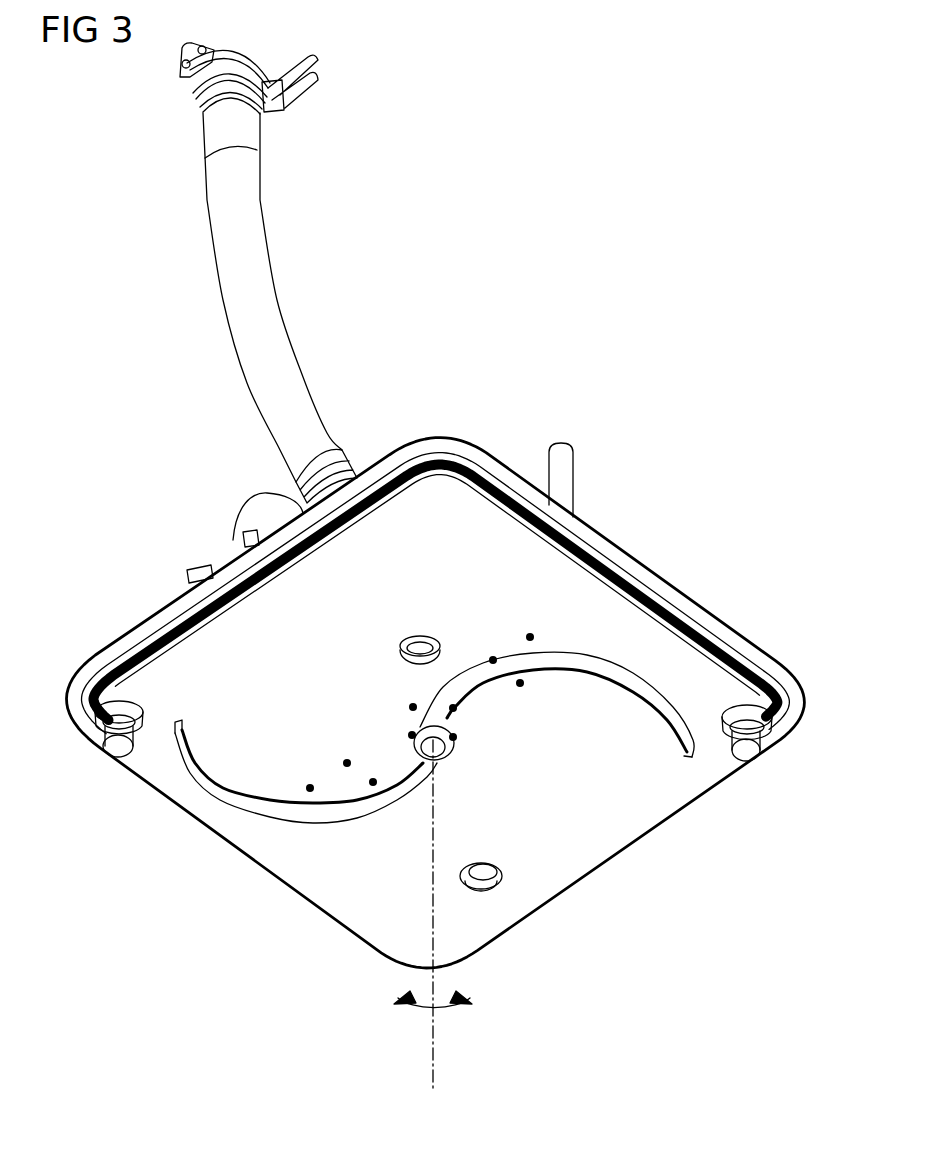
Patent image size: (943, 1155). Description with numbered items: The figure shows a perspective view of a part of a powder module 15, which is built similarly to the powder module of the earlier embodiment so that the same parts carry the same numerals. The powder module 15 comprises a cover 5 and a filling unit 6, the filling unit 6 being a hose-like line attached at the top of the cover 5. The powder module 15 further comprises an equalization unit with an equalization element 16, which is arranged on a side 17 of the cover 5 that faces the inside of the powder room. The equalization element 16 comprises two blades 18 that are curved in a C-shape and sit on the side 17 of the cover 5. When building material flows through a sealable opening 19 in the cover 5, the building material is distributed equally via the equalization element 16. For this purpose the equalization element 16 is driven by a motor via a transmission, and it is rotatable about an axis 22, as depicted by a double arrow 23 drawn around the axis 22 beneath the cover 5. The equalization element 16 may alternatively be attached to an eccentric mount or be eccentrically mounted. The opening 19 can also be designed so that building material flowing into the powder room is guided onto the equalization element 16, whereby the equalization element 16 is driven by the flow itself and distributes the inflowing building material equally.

The cover 5 is at (710, 610).
The filling unit 6 is at (265, 299).
The powder module 15 is at (690, 160).
The equalization element 16 is at (460, 650).
The side 17 is at (598, 802).
The blades 18 is at (265, 800).
The sealable opening 19 is at (417, 643).
The axis 22 is at (435, 1077).
The double arrow 23 is at (477, 1012).